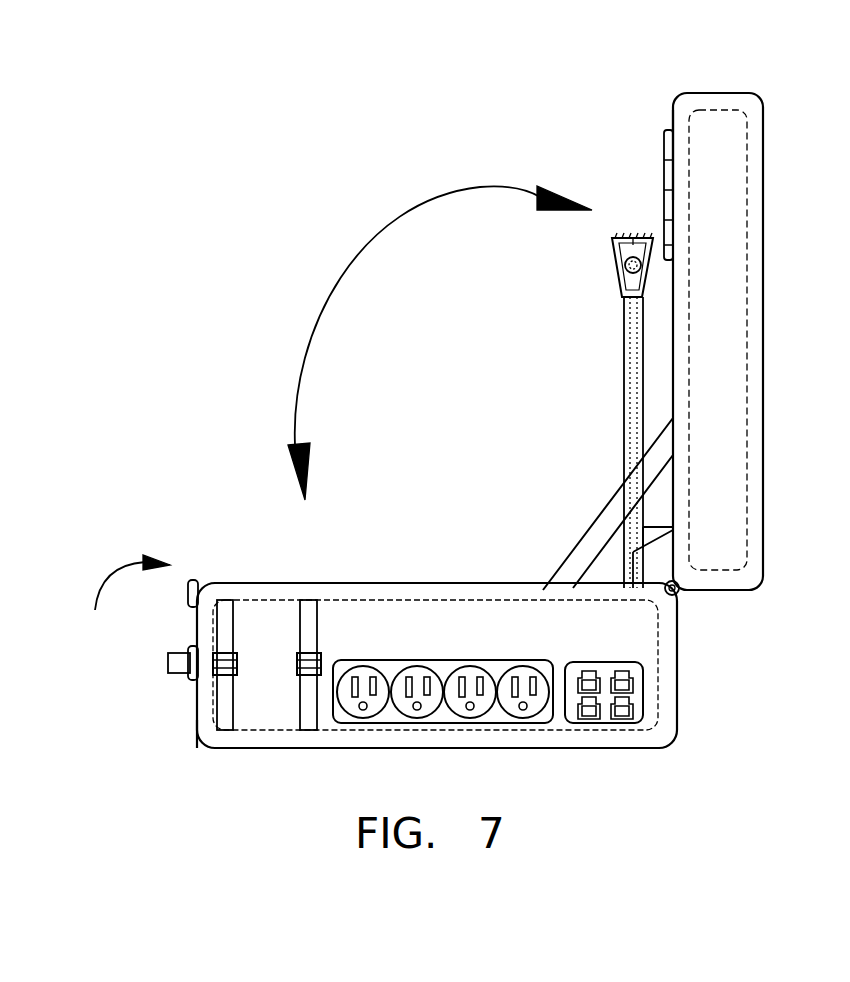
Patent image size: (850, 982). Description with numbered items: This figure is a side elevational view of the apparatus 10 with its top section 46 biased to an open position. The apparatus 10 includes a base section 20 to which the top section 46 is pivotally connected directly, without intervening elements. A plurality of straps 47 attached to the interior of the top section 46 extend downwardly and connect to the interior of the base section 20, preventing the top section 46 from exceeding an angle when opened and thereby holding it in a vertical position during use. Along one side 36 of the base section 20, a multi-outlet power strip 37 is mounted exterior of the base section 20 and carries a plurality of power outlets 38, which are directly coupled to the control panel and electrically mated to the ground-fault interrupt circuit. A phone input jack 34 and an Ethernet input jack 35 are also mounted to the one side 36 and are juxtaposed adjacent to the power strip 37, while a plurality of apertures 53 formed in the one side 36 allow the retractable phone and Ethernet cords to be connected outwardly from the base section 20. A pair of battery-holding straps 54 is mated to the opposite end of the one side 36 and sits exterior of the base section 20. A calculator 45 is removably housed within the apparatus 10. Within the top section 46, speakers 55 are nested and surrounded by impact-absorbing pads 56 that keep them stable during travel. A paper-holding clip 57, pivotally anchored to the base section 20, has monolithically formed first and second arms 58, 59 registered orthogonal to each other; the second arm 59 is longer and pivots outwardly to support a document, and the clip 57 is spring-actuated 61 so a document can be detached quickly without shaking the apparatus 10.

The apparatus 10 is at (150, 150).
The base section 20 is at (250, 748).
The phone input jack 34 is at (598, 688).
The Ethernet input jack 35 is at (600, 735).
The one side 36 is at (282, 716).
The multi-outlet power strip 37 is at (345, 735).
The 110-volt power outlets 38 is at (368, 712).
The calculator 45 is at (205, 748).
The top section 46 is at (763, 265).
The straps 47 is at (578, 545).
The apertures 53 is at (660, 692).
The battery-holding straps 54 is at (305, 600).
The speakers 55 is at (663, 165).
The impact-absorbing pads 56 is at (672, 128).
The paper-holding clip 57 is at (612, 255).
The first arm 58 is at (624, 288).
The second arm 59 is at (625, 430).
The spring-actuated 61 is at (633, 238).